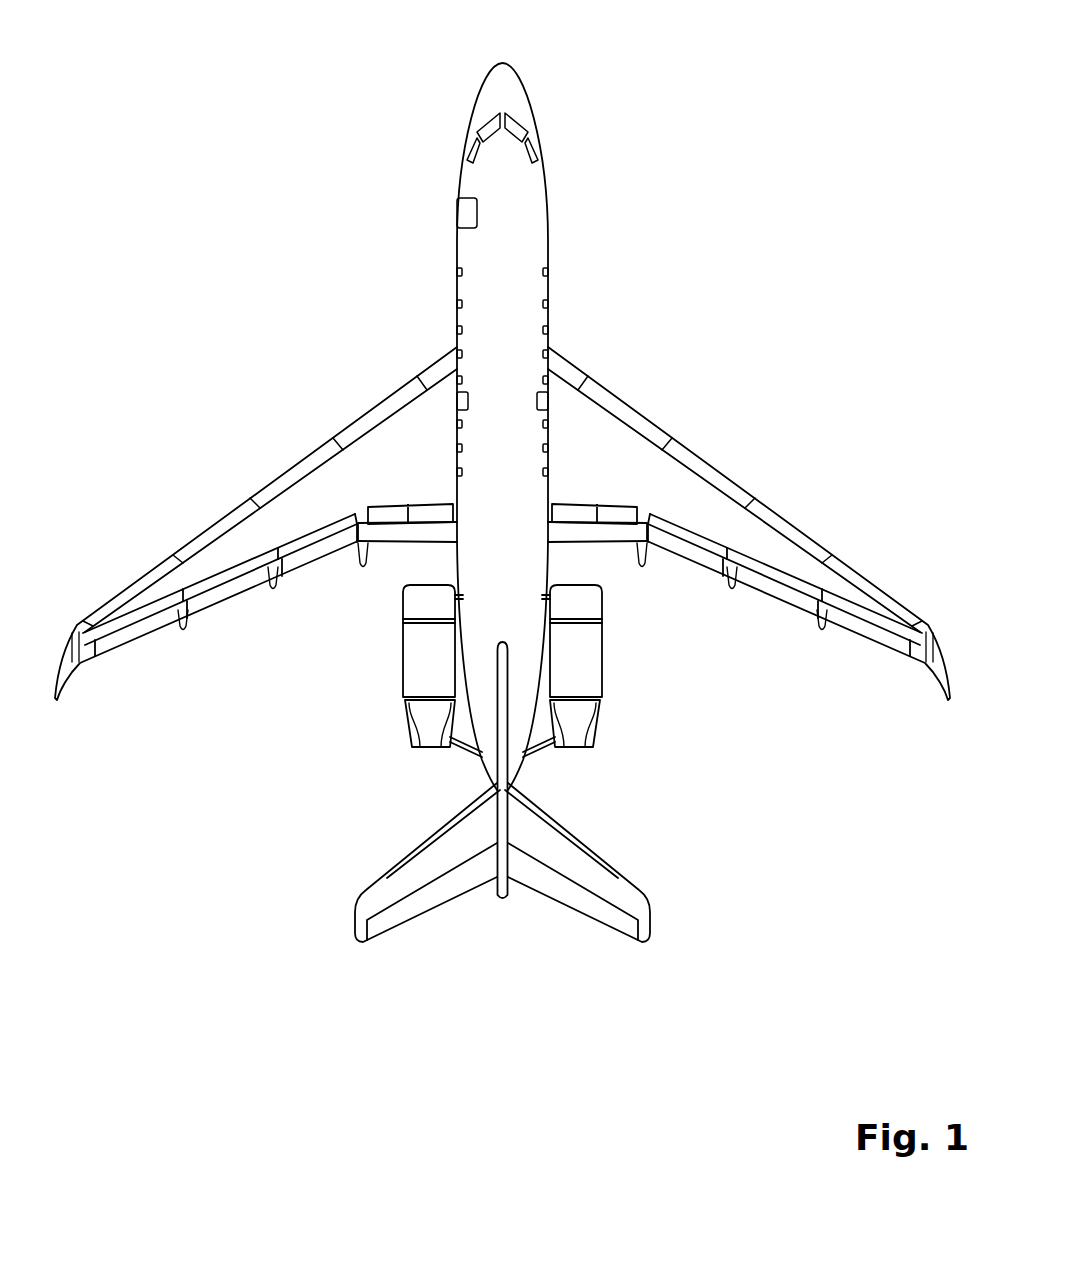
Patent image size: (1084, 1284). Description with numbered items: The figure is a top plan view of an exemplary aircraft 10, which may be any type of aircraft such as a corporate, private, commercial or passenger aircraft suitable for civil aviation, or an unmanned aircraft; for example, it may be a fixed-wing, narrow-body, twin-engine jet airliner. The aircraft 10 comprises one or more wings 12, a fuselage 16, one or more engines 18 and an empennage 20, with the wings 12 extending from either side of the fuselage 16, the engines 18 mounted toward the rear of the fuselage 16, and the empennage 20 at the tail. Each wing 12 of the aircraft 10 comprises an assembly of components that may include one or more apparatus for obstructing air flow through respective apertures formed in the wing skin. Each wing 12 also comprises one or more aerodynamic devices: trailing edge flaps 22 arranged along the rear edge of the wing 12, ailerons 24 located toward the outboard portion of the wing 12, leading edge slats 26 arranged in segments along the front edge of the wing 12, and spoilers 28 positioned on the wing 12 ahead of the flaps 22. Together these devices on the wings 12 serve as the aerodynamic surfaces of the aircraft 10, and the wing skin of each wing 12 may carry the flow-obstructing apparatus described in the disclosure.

The aircraft 10 is at (505, 539).
The wing 12 is at (505, 557).
The fuselage 16 is at (522, 276).
The engine 18 is at (413, 683).
The empennage 20 is at (485, 1010).
The trailing edge flap 22 is at (403, 533).
The aileron 24 is at (120, 638).
The leading edge slat 26 is at (352, 430).
The spoiler 28 is at (333, 530).